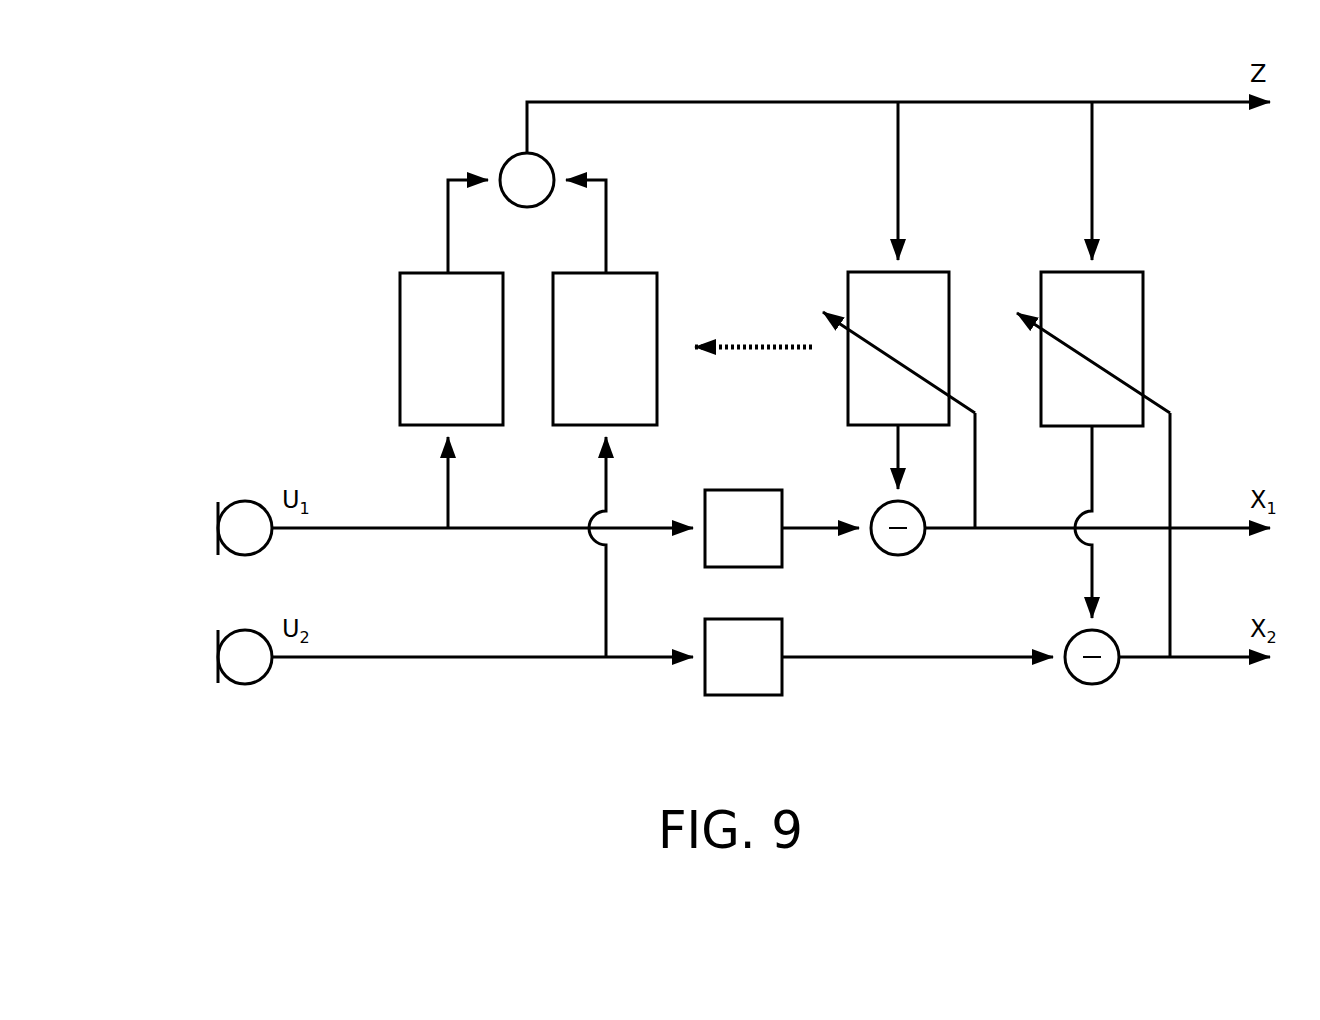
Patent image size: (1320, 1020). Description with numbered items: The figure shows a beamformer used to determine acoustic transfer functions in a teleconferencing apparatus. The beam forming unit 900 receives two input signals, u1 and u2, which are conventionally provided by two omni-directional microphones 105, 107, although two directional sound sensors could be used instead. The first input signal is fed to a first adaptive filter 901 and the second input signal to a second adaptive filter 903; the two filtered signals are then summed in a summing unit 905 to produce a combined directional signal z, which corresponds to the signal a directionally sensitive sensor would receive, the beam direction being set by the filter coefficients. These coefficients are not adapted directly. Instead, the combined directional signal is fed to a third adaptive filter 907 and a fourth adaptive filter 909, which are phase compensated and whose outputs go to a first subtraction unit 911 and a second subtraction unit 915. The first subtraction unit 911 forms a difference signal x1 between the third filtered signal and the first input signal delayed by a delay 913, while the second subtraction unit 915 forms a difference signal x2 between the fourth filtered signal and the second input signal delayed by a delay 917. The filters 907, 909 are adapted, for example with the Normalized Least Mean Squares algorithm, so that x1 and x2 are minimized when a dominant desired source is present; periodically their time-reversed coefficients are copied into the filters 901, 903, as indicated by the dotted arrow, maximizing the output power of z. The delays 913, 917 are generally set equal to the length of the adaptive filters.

The beam forming unit 900 is at (216, 136).
The omni-directional microphone 105 is at (262, 548).
The omni-directional microphone 107 is at (262, 677).
The first adaptive filter 901 is at (400, 300).
The second adaptive filter 903 is at (657, 300).
The summing unit 905 is at (506, 162).
The third adaptive filter 907 is at (848, 283).
The fourth adaptive filter 909 is at (1143, 283).
The first subtraction unit 911 is at (919, 548).
The delay 913 is at (782, 552).
The second subtraction unit 915 is at (1112, 677).
The delay 917 is at (782, 680).